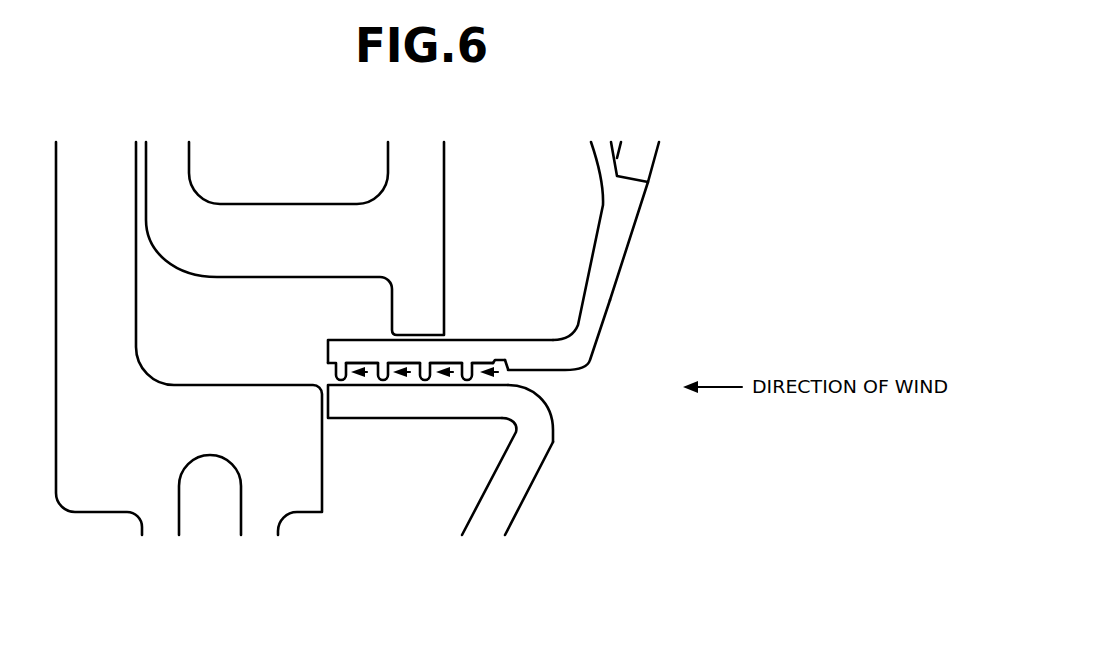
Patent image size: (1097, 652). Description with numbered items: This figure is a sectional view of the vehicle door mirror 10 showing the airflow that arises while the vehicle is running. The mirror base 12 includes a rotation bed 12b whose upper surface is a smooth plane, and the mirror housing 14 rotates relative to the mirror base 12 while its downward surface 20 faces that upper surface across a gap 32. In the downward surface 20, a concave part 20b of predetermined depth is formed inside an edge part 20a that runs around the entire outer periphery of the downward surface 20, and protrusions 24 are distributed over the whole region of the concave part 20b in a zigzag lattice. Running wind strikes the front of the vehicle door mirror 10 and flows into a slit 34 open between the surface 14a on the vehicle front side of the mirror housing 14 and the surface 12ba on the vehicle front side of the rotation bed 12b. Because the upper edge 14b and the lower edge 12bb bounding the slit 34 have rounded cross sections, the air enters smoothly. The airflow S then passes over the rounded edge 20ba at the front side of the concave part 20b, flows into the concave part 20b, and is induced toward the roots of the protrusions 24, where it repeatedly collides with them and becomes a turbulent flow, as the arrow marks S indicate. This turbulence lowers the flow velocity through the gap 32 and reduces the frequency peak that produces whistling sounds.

The vehicle door mirror 10 is at (752, 172).
The mirror housing 14 is at (630, 256).
The surface on the vehicle front side of the mirror housing 14a is at (612, 296).
The edge of the lower end portion of surface 14a 14b is at (591, 363).
The downward surface 20 is at (501, 315).
The edge part 20a is at (525, 373).
The concave part 20b is at (485, 362).
The edge of the outer peripheral edge part of the concave part 20ba is at (521, 364).
The protrusions 24 is at (467, 370).
The gap 32 is at (481, 362).
The slit 34 is at (520, 386).
The mirror base 12 is at (563, 481).
The rotation bed 12b is at (557, 461).
The surface on the vehicle front side of the rotation bed 12ba is at (546, 462).
The lower edge of the slit 12bb is at (557, 410).
The airflow (arrow marks) S is at (498, 378).